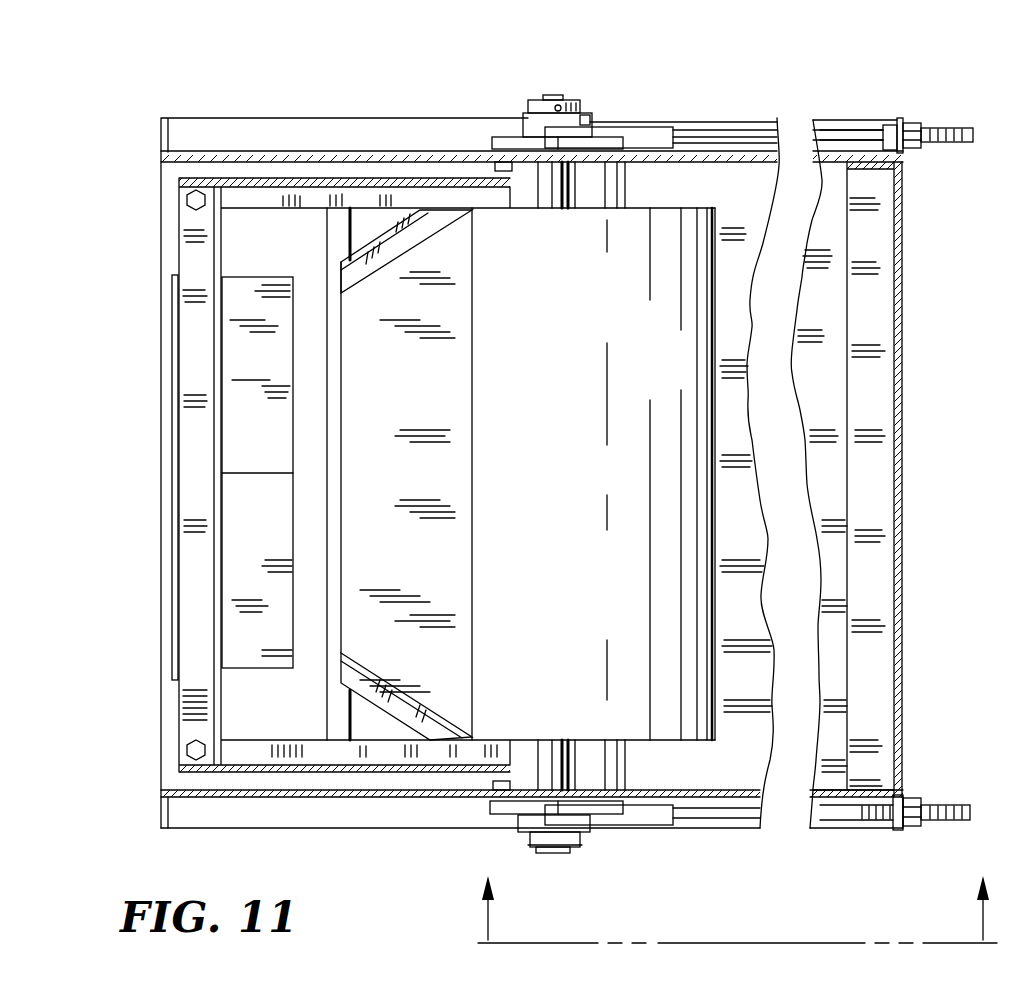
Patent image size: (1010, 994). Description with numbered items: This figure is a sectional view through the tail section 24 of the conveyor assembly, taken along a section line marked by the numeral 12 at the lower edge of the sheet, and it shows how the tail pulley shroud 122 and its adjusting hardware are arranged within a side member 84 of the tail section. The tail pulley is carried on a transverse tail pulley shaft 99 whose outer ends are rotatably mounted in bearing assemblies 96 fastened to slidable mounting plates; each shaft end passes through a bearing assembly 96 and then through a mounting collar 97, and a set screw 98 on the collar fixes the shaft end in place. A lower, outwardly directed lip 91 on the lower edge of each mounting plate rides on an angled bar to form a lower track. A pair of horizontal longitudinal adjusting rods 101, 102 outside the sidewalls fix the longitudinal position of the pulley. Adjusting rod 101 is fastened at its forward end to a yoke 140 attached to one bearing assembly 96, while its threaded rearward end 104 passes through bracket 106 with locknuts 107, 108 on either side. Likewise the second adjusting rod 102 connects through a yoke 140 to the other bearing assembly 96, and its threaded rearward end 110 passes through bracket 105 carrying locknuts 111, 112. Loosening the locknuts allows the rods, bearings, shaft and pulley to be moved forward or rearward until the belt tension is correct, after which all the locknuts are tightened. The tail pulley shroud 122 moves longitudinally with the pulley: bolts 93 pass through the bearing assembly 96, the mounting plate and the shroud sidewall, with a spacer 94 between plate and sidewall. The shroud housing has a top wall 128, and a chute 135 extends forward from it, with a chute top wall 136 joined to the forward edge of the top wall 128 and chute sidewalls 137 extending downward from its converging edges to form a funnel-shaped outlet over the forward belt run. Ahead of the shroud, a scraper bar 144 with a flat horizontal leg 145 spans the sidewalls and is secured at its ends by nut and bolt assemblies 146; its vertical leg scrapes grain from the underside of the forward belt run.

The section line 12- 12 is at (735, 935).
The tail section 24 is at (681, 854).
The side wall 84 is at (903, 379).
The lower, outwardly directed lip 91 is at (345, 800).
The bolts 93 is at (505, 134).
The spacer 94 is at (558, 193).
The bearing assembly 96 is at (531, 118).
The mounting collar 97 is at (528, 850).
The set screw 98 is at (572, 846).
The tail pulley shaft 99 is at (566, 80).
The adjusting rod 101 is at (740, 817).
The second longitudinal adjusting rod 102 is at (743, 135).
The rearward end of adjusting rod 104 is at (950, 823).
The bracket 105 is at (893, 125).
The bracket 106 is at (900, 830).
The locknut 107 is at (887, 820).
The locknut 108 is at (907, 800).
The rearward end of adjusting rod 110 is at (938, 128).
The locknut 111 is at (913, 123).
The locknut 112 is at (888, 123).
The tail pulley shroud 122 is at (726, 403).
The top wall 128 is at (618, 304).
The chute 135 is at (496, 468).
The chute top wall 136 is at (430, 596).
The chute sidewalls 137 is at (385, 243).
The yoke 140 is at (647, 127).
The scraper bar 144 is at (140, 349).
The flat horizontal leg 145 is at (192, 548).
The nut and bolt assemblies 146 is at (186, 200).